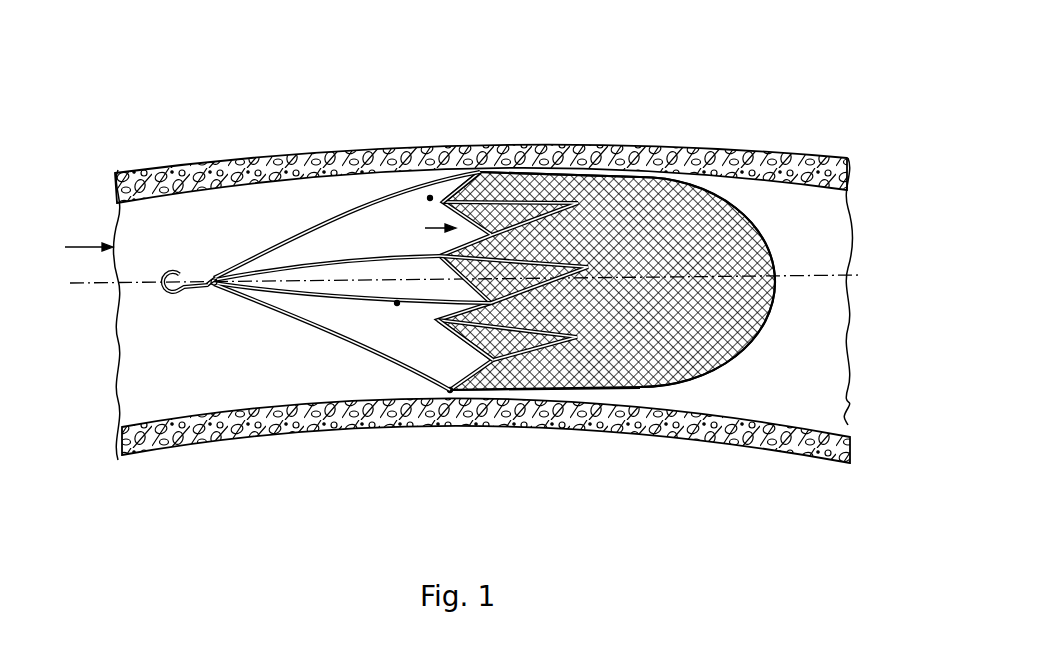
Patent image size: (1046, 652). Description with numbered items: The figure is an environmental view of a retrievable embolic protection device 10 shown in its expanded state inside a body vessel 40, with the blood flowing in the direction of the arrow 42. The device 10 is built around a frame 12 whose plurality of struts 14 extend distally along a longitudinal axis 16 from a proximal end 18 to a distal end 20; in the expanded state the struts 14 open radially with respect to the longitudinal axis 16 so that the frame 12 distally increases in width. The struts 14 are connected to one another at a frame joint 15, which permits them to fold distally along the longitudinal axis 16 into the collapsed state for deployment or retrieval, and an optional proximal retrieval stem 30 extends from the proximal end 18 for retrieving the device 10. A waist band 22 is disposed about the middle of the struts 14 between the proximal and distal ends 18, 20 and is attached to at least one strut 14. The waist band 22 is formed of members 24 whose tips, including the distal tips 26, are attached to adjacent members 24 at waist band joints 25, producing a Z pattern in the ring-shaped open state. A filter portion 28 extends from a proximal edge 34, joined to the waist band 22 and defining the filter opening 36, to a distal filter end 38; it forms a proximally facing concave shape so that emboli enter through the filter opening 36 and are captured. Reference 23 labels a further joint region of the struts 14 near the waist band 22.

The embolic protection device 10 is at (499, 310).
The frame 12 is at (323, 347).
The struts 14 is at (318, 225).
The frame joint 15 is at (216, 270).
The longitudinal axis 16 is at (98, 286).
The proximal end 18 is at (225, 292).
The distal end 20 is at (649, 296).
The waist band 22 is at (475, 172).
The strut junctions 23 is at (428, 197).
The members 24 is at (470, 345).
The waist band joints 25 is at (442, 200).
The distal tips 26 is at (640, 390).
The filter portion 28 is at (693, 380).
The proximal retrieval stem 30 is at (170, 294).
The proximal edge 34 is at (448, 392).
The filter opening 36 is at (425, 228).
The distal filter end 38 is at (750, 227).
The body vessel 40 is at (735, 152).
The arrow 42 is at (70, 248).